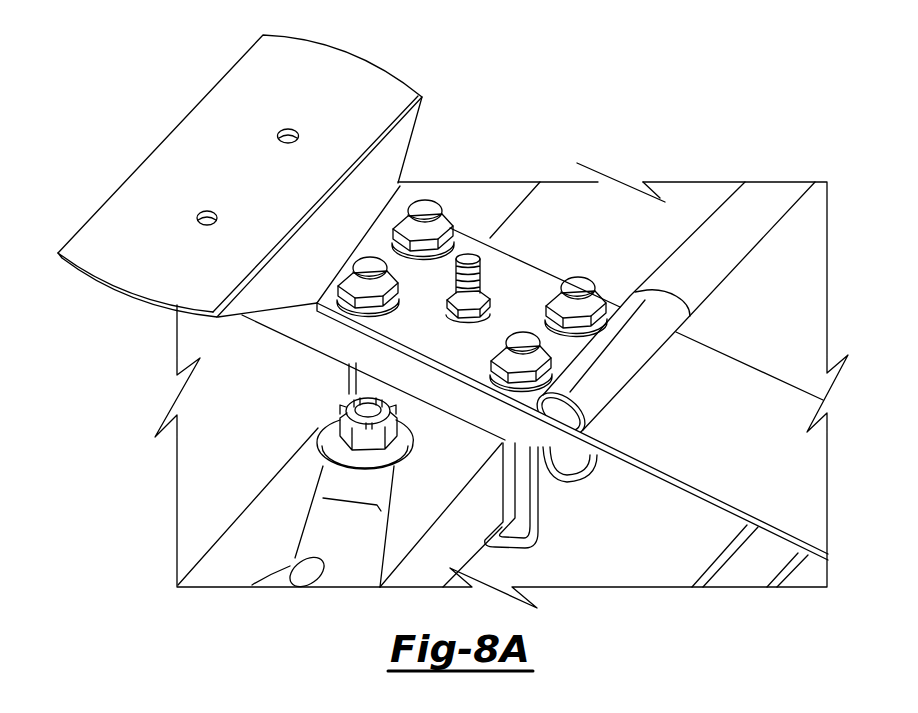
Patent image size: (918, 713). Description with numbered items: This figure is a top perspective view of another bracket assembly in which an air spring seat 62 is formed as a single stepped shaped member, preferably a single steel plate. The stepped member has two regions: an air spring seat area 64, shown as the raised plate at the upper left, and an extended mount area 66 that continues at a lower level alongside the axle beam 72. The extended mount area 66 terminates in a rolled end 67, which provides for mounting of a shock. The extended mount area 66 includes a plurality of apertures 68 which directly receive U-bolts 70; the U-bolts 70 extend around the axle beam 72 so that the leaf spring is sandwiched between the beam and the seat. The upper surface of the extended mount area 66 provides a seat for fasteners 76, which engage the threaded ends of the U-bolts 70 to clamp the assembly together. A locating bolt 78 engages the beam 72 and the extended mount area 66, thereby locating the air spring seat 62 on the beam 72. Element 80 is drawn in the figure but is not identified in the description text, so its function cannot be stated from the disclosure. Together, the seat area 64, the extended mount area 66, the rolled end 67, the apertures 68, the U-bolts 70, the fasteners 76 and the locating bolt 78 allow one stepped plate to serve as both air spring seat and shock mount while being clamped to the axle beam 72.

The air spring seat 62 is at (240, 169).
The air spring seat area 64 is at (250, 173).
The extended mount area 66 is at (523, 266).
The rolled end 67 is at (638, 352).
The apertures 68 is at (453, 237).
The U-bolts 70 is at (523, 502).
The axle beam 72 is at (470, 537).
The fasteners 76 is at (395, 292).
The locating bolt 78 is at (455, 284).
The pivot arm with castle nut 80 is at (440, 415).